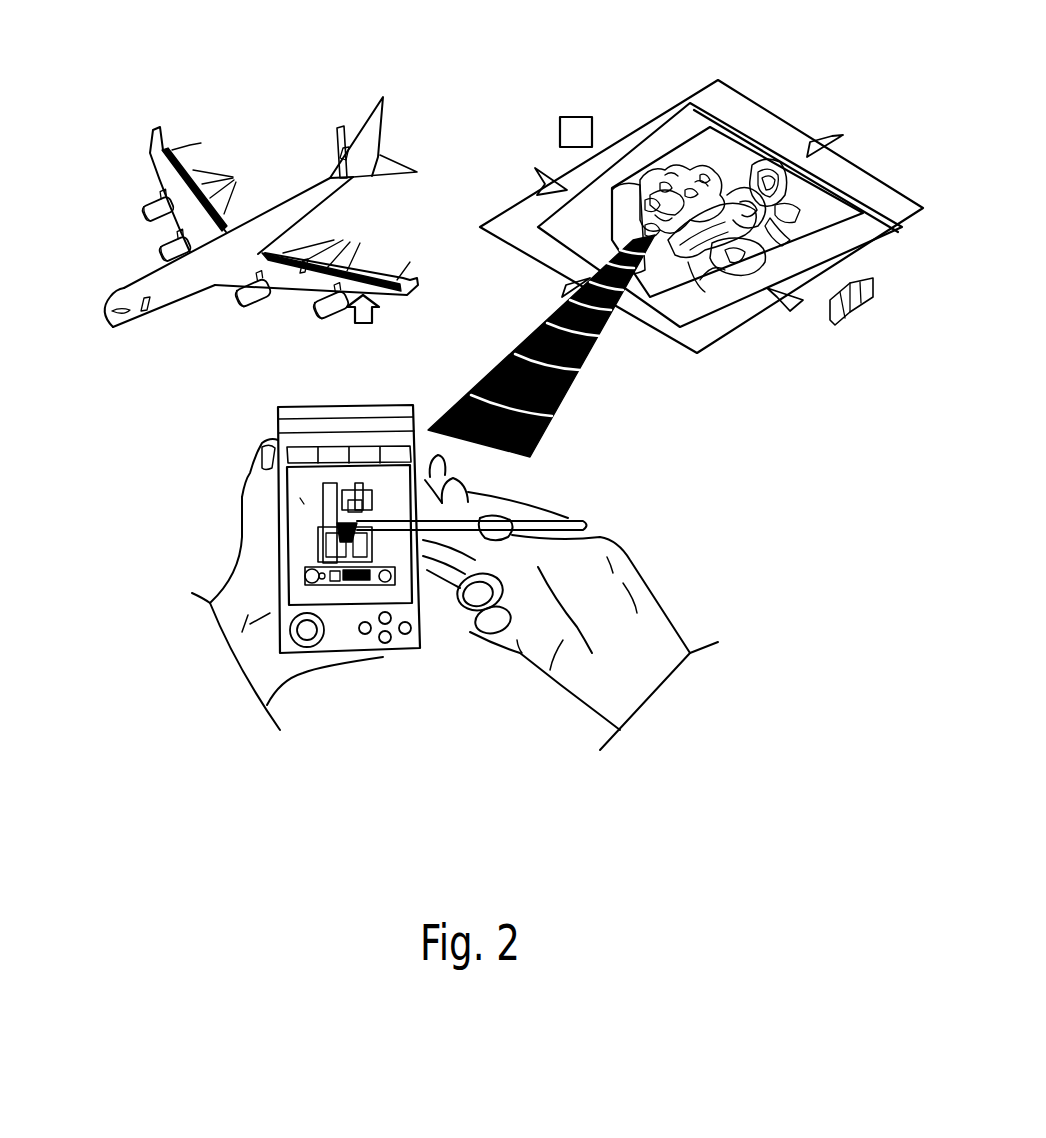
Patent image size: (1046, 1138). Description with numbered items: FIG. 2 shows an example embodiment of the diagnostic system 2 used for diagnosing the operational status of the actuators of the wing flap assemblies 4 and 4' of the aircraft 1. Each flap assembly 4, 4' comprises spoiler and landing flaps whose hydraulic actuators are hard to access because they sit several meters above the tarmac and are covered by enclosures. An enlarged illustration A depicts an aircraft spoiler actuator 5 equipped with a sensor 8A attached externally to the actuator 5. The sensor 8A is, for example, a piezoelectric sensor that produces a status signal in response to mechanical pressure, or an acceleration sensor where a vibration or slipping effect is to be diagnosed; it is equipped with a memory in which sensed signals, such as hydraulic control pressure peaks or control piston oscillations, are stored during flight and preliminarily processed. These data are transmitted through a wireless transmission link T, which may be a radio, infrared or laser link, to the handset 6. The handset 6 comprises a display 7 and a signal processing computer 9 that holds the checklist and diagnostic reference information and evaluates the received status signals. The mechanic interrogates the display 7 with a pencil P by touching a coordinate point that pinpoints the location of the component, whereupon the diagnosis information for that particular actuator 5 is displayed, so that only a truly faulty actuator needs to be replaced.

The aircraft 1 is at (124, 197).
The augmented reality display system 2 is at (578, 415).
The flap assembly 4 is at (236, 134).
The flap assembly 4' is at (359, 234).
The hydraulic actuator 5 is at (723, 160).
The handset 6 is at (407, 648).
The display 7 is at (297, 493).
The sensor 8A is at (653, 187).
The signal processing computer 9 is at (285, 418).
The enlarged illustration A is at (586, 148).
The pencil P is at (567, 528).
The wireless transmission link T is at (593, 350).